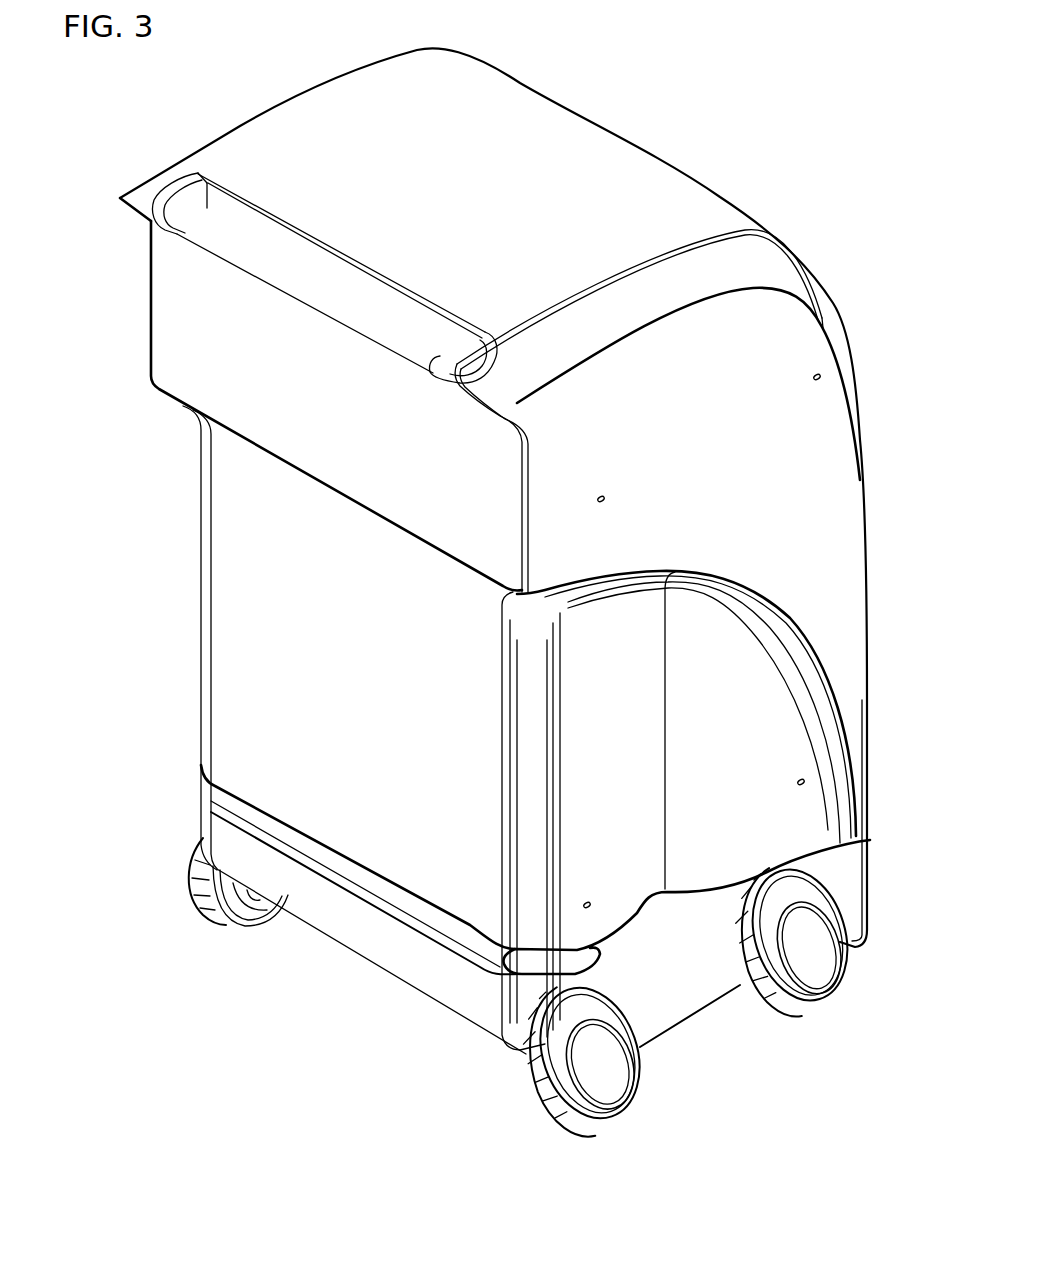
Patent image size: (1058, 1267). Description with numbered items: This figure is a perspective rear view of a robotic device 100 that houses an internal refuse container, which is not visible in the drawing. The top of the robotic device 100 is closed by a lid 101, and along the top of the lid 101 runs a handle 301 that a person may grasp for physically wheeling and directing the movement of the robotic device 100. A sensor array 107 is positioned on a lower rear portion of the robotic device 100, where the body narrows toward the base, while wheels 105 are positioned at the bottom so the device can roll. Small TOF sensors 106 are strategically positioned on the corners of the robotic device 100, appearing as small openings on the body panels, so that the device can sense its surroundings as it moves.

The robotic device 100 is at (497, 730).
The lid 101 is at (493, 497).
The wheels 105 is at (795, 950).
The TOF sensors 106 is at (579, 910).
The sensor array 107 is at (258, 834).
The handle 301 is at (274, 294).